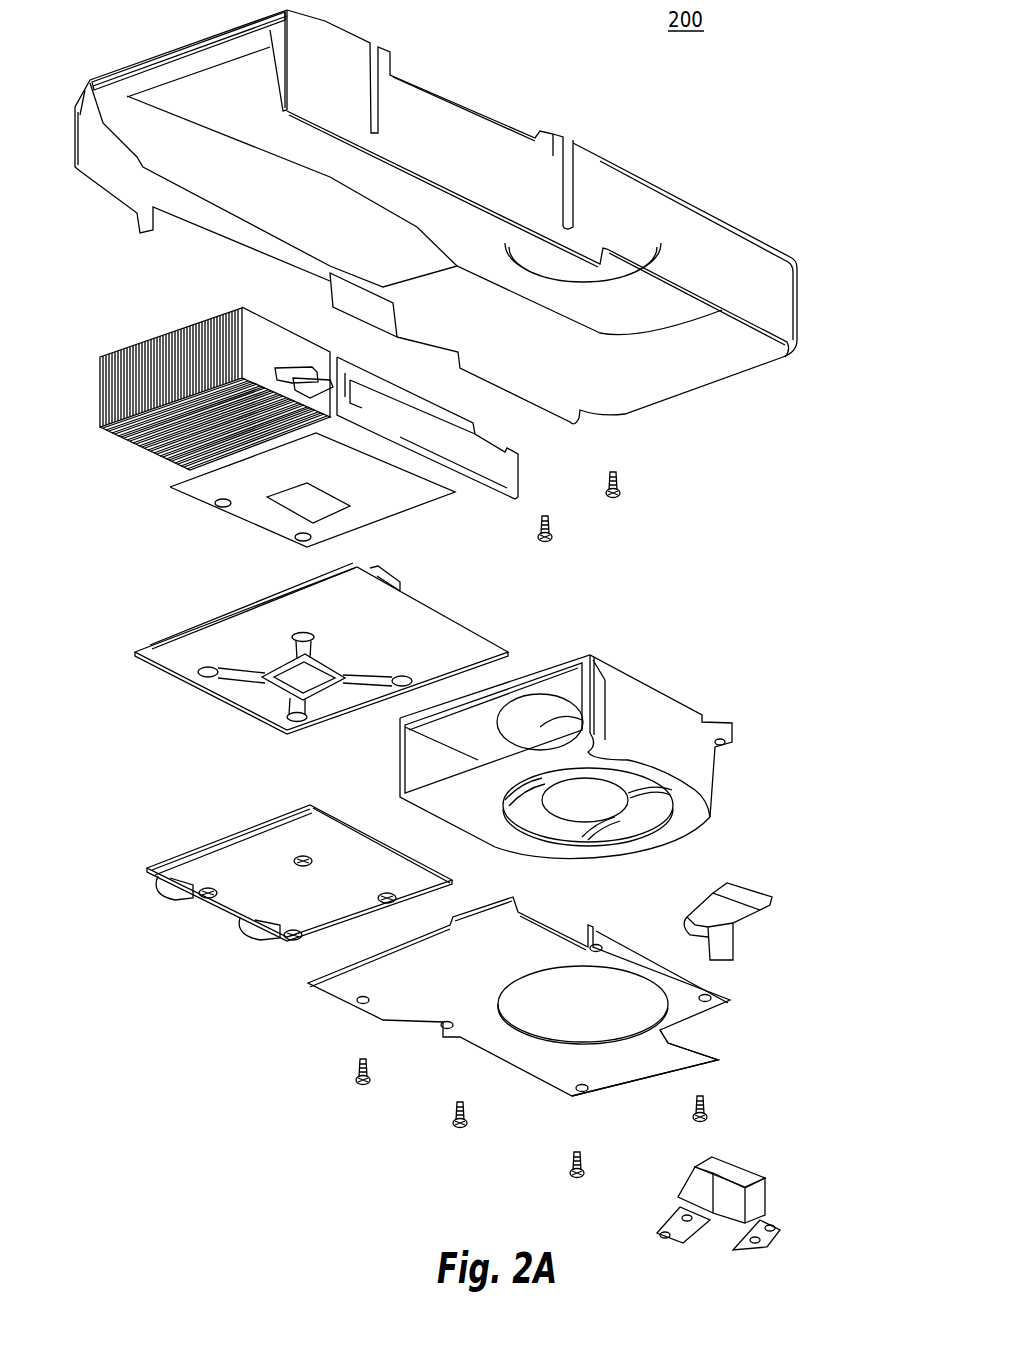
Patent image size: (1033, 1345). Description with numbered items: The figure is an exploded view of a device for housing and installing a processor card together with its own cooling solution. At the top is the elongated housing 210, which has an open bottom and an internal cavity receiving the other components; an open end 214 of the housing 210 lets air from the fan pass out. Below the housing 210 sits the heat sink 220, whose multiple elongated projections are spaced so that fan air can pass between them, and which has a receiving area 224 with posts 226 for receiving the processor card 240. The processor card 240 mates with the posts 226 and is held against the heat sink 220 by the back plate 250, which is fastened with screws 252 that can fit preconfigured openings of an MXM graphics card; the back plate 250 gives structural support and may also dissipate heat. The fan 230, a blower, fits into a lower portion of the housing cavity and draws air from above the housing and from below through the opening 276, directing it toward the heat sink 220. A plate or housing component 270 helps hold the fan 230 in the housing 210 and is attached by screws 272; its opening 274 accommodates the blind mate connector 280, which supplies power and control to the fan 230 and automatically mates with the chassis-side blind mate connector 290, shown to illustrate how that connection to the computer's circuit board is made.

The housing 210 is at (457, 120).
The end 214 is at (183, 47).
The heat sink 220 is at (187, 330).
The receiving area 224 is at (360, 503).
The posts 226 is at (217, 503).
The fan 230 is at (653, 695).
The processor card 240 is at (473, 620).
The back plate 250 is at (250, 842).
The screws 252 is at (283, 943).
The plate/housing component 270 is at (340, 988).
The screws 272 is at (447, 1120).
The opening 274 is at (690, 1033).
The opening 276 is at (580, 1013).
The blind mate connector 280 is at (760, 935).
The blind mate connector 290 is at (757, 1163).